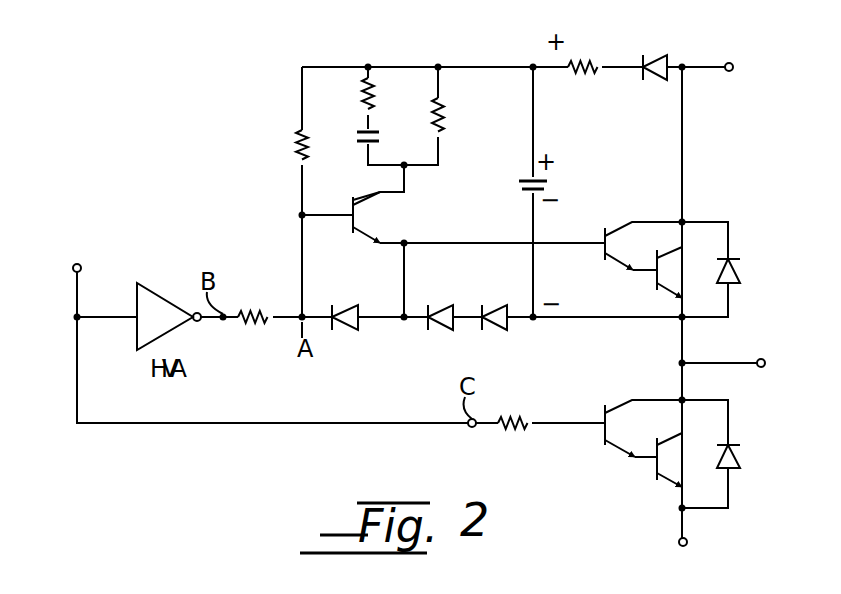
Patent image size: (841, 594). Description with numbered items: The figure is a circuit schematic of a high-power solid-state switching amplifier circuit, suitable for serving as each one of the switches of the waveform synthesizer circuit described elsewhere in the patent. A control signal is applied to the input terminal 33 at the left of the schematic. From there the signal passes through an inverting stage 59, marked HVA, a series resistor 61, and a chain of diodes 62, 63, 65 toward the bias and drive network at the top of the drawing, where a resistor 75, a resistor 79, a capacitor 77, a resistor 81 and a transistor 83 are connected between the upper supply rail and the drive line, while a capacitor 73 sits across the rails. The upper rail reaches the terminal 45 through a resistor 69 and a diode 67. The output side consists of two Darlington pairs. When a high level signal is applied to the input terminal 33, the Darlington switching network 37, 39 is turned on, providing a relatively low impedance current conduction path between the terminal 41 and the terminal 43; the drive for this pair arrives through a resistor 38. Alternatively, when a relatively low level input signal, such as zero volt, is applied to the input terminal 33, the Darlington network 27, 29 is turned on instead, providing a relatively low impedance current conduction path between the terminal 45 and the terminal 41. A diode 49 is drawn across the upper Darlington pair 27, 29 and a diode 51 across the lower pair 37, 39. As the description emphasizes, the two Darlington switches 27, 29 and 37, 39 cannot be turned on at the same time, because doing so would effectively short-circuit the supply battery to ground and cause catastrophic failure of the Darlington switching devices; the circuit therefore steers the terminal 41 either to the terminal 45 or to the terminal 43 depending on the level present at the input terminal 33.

The Darlington network transistor 27 is at (620, 222).
The Darlington network transistor 29 is at (674, 252).
The input terminal 33 is at (77, 262).
The Darlington switching network transistor 37 is at (615, 400).
The resistor 38 is at (513, 412).
The Darlington switching network transistor 39 is at (668, 438).
The terminal 41 is at (761, 358).
The terminal 43 is at (688, 542).
The terminal 45 is at (729, 62).
The diode 49 is at (739, 259).
The diode 51 is at (739, 446).
The high voltage amplifier inverter 59 is at (155, 292).
The resistor 61 is at (255, 306).
The diode 62 is at (333, 305).
The diode 63 is at (429, 305).
The diode 65 is at (484, 305).
The diode 67 is at (645, 52).
The resistor 69 is at (582, 50).
The capacitor 73 is at (545, 185).
The resistor 75 is at (299, 149).
The capacitor 77 is at (379, 133).
The resistor 79 is at (377, 92).
The resistor 81 is at (452, 116).
The transistor 83 is at (371, 196).